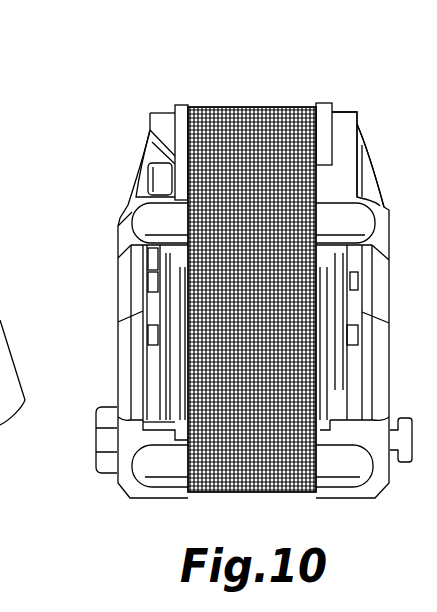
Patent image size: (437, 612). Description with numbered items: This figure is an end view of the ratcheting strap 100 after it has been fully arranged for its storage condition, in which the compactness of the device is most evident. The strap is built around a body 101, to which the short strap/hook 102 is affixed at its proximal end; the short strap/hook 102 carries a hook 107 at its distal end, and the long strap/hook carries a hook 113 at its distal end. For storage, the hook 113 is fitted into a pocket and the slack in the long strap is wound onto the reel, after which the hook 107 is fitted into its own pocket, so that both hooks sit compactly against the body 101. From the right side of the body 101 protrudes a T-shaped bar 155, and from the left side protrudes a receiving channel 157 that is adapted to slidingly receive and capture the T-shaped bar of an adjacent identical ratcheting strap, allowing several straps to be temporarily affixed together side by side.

The ratcheting strap 100 is at (169, 95).
The body 101 is at (375, 178).
The short strap/hook 102 is at (243, 107).
The hook 107 is at (170, 488).
The hook 113 is at (118, 224).
The T-shaped bar 155 is at (407, 463).
The receiving channel 157 is at (96, 457).